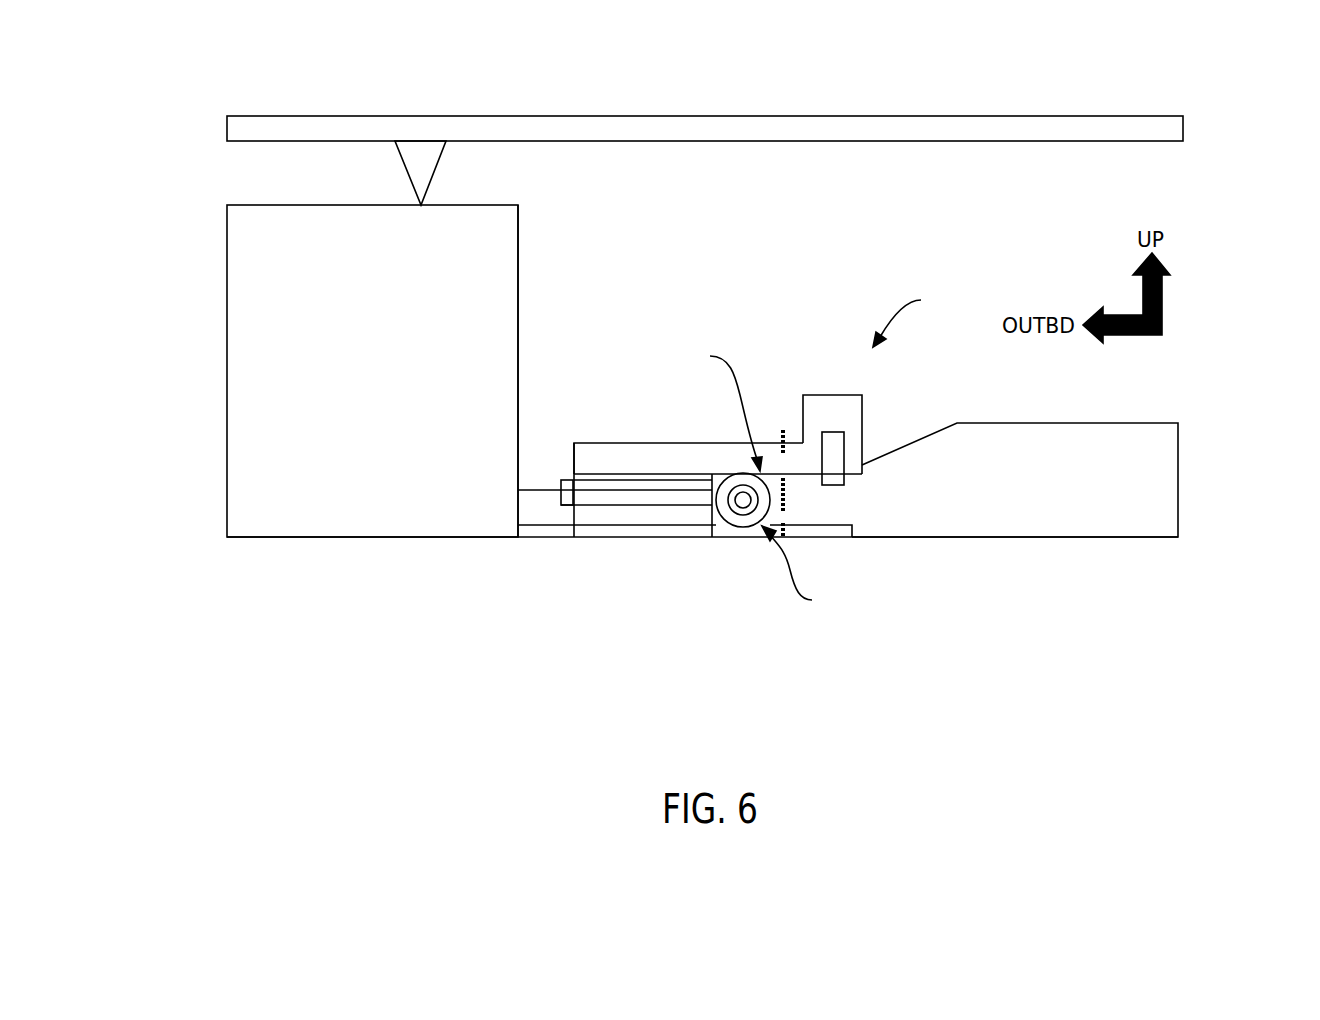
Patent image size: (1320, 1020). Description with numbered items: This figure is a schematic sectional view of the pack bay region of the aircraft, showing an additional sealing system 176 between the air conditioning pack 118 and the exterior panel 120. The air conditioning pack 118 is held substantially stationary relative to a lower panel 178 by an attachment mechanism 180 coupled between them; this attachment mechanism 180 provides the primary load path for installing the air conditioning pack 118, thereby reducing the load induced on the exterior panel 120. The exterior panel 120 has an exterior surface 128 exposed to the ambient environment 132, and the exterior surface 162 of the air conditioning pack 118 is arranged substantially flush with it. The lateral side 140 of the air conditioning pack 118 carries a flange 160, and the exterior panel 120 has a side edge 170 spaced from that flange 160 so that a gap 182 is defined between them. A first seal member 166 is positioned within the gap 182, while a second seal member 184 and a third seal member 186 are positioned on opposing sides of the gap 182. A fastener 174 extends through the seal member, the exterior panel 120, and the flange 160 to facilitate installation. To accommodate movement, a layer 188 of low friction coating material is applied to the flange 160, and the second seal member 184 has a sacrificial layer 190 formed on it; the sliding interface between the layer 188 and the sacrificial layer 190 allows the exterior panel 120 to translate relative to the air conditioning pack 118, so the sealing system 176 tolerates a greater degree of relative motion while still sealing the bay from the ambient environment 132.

The air conditioning pack 118 is at (227, 338).
The exterior panel 120 is at (1178, 470).
The exterior surface 128 is at (1027, 537).
The ambient environment 132 is at (699, 703).
The lateral side 140 is at (518, 260).
The flange 160 is at (612, 538).
The exterior surface 162 is at (312, 537).
The first seal member 166 is at (713, 517).
The side edge 170 is at (717, 407).
The fastener 174 is at (782, 431).
The sealing system 176 is at (916, 317).
The lower panel 178 is at (922, 116).
The attachment mechanism 180 is at (437, 166).
The gap 182 is at (806, 570).
The second seal member 184 is at (682, 443).
The third seal member 186 is at (732, 537).
The layer of low friction coating material 188 is at (530, 517).
The sacrificial layer 190 is at (562, 482).